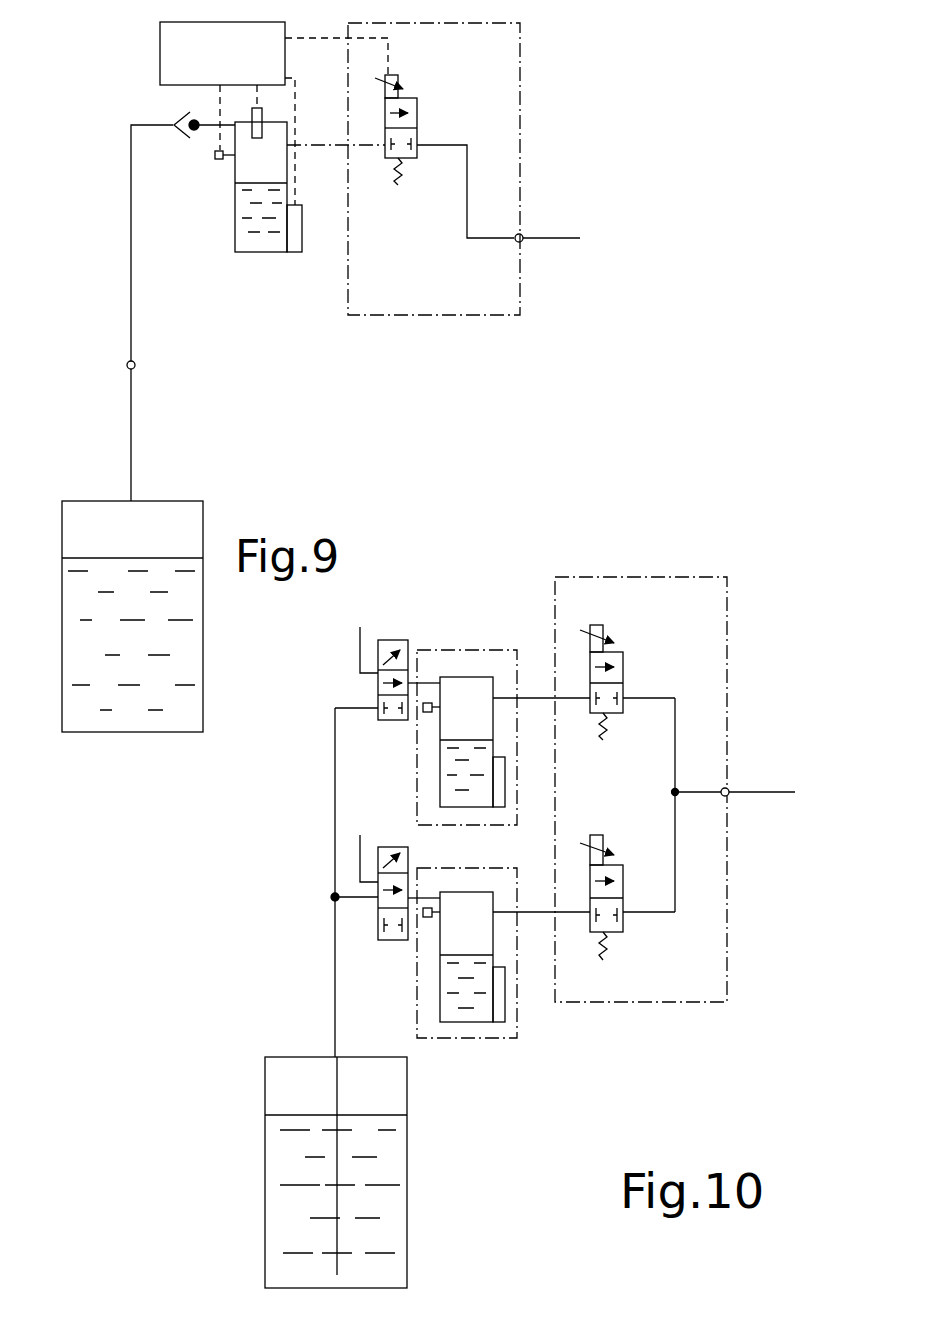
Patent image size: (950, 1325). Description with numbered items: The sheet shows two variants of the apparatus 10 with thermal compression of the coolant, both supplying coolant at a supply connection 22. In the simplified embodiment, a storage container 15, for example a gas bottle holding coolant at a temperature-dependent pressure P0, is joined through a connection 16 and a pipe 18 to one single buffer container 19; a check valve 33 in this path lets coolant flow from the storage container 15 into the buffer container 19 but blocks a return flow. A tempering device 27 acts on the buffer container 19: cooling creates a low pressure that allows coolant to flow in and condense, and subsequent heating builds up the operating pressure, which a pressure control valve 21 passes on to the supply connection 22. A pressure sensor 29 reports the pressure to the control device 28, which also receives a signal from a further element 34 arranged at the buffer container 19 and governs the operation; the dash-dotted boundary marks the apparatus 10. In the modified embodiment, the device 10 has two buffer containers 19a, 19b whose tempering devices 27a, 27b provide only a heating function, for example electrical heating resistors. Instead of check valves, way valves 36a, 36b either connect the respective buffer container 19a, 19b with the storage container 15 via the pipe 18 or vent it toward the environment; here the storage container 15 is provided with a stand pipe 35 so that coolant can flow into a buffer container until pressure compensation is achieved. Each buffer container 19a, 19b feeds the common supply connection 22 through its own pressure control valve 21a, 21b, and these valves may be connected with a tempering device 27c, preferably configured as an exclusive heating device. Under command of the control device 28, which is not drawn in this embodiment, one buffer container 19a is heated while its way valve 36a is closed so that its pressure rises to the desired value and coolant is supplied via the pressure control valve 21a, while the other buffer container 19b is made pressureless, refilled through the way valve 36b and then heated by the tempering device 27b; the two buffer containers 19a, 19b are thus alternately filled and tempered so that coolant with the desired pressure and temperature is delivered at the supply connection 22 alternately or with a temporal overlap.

In FIG. 9, the apparatus 10 is at (596, 98).
In FIG. 10, the apparatus 10 is at (748, 626).
In FIG. 9, the storage container 15 is at (110, 462).
In FIG. 10, the storage container 15 is at (316, 1018).
In FIG. 9, the connection 16 is at (128, 358).
In FIG. 9, the pipe 18 is at (126, 148).
In FIG. 10, the pipe 18 is at (333, 774).
In FIG. 9, the buffer container 19 is at (268, 253).
In FIG. 10, the buffer container 19a is at (452, 808).
In FIG. 10, the buffer container 19b is at (478, 1022).
In FIG. 9, the pressure control valve 21 is at (428, 117).
In FIG. 10, the pressure control valve 21a is at (634, 652).
In FIG. 10, the pressure control valve 21b is at (584, 897).
In FIG. 9, the supply connection 22 is at (523, 234).
In FIG. 10, the supply connection 22 is at (730, 788).
In FIG. 9, the tempering device 27 is at (297, 240).
In FIG. 9, the tempering device 27a is at (525, 313).
In FIG. 10, the tempering device 27a is at (508, 787).
In FIG. 10, the tempering device 27b is at (508, 1008).
In FIG. 10, the tempering device 27c is at (650, 1003).
In FIG. 9, the control device 28 is at (224, 66).
In FIG. 9, the pressure sensor 29 is at (219, 161).
In FIG. 9, the check valve 33 is at (188, 132).
In FIG. 9, the position sensor 34 is at (262, 140).
In FIG. 10, the stand pipe 35 is at (338, 1076).
In FIG. 10, the way valve 36a is at (420, 636).
In FIG. 10, the way valve 36b is at (382, 832).
In FIG. 9, the pressure in the storage container P0 is at (66, 502).
In FIG. 10, the pressure in the storage container P0 is at (300, 1062).